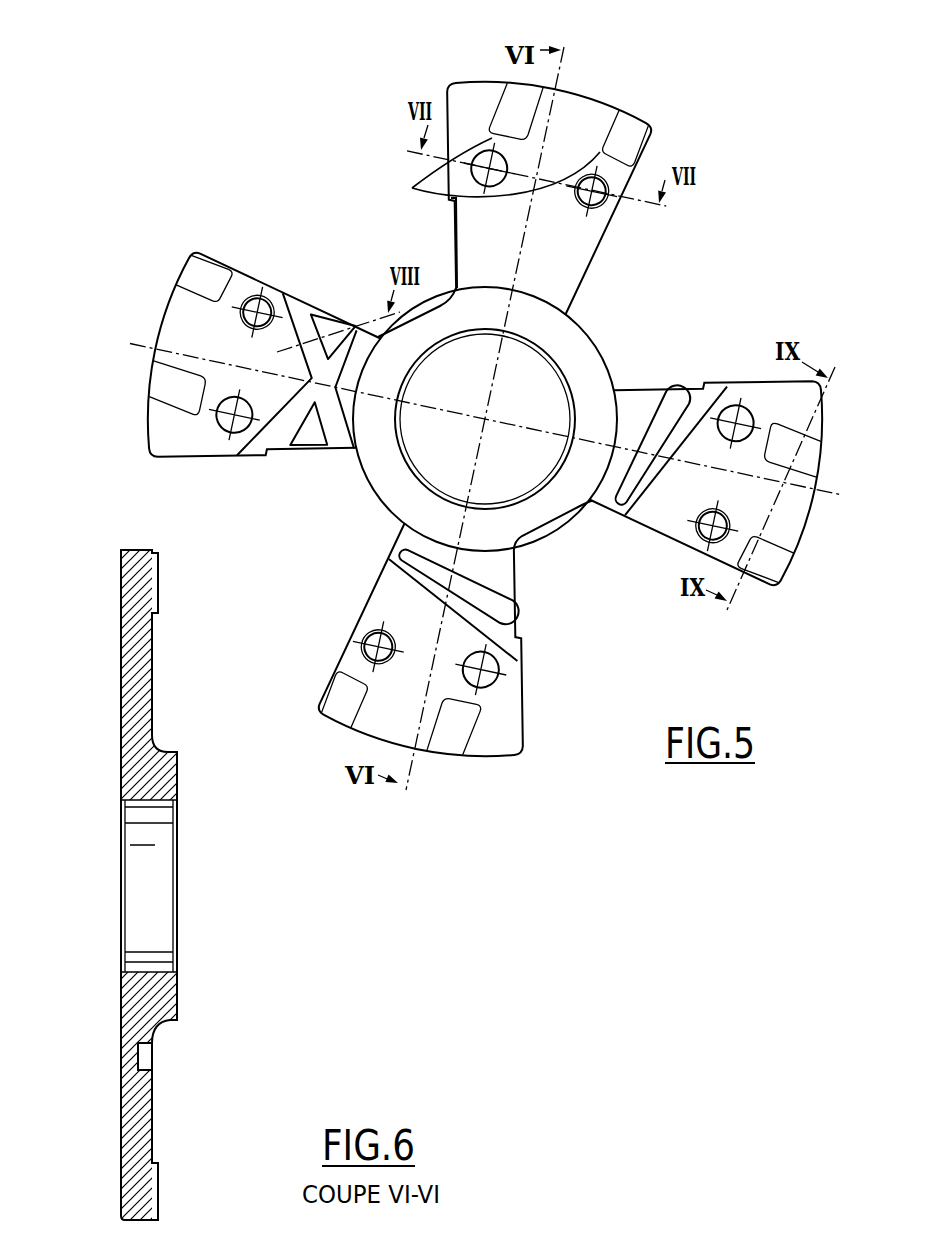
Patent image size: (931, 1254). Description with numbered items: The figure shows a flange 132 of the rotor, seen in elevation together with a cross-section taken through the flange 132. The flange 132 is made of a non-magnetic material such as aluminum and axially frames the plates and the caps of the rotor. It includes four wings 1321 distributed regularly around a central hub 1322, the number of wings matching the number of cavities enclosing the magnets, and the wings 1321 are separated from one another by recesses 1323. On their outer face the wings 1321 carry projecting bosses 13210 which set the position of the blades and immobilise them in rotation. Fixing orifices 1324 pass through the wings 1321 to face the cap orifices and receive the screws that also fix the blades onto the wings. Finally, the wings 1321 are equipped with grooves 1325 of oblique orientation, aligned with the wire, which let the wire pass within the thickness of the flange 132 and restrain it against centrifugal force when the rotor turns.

In FIG. 5, the flange 132 is at (626, 94).
In FIG. 6, the flange 132 is at (171, 870).
In FIG. 5, the wings 1321 is at (572, 166).
In FIG. 6, the wings 1321 is at (130, 676).
In FIG. 5, the projecting bosses 13210 is at (412, 188).
In FIG. 6, the projecting bosses 13210 is at (160, 583).
In FIG. 5, the central hub 1322 is at (412, 489).
In FIG. 6, the central hub 1322 is at (162, 780).
In FIG. 5, the recesses 1323 is at (307, 255).
In FIG. 5, the fixing orifices 1324 is at (612, 205).
In FIG. 5, the grooves 1325 is at (608, 497).
In FIG. 6, the grooves 1325 is at (150, 1055).